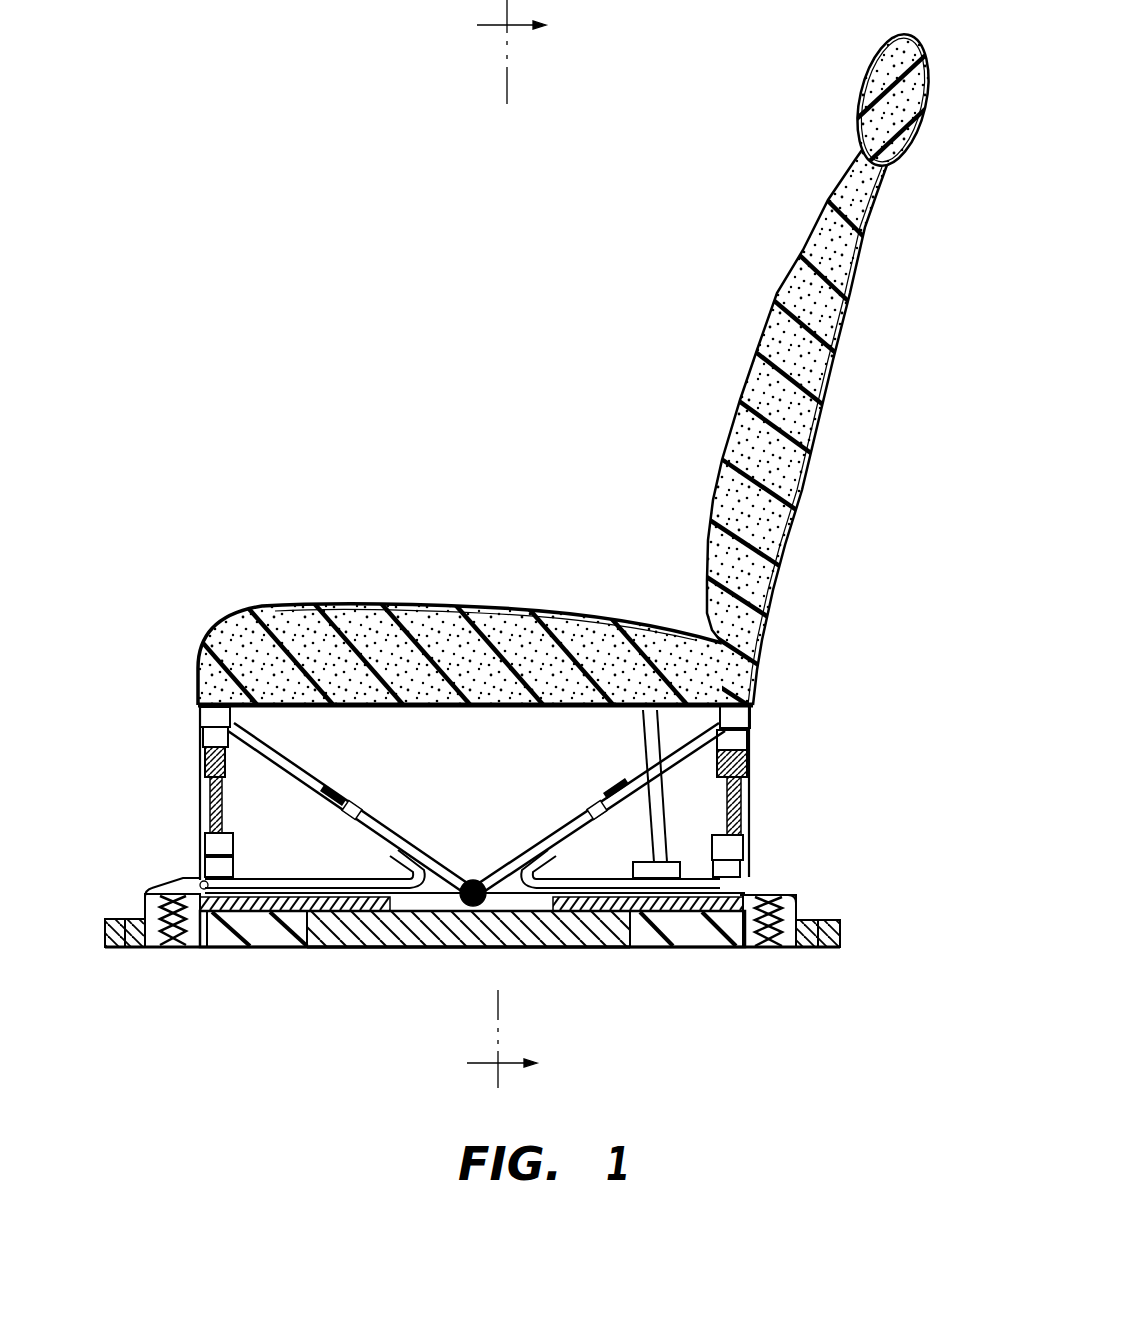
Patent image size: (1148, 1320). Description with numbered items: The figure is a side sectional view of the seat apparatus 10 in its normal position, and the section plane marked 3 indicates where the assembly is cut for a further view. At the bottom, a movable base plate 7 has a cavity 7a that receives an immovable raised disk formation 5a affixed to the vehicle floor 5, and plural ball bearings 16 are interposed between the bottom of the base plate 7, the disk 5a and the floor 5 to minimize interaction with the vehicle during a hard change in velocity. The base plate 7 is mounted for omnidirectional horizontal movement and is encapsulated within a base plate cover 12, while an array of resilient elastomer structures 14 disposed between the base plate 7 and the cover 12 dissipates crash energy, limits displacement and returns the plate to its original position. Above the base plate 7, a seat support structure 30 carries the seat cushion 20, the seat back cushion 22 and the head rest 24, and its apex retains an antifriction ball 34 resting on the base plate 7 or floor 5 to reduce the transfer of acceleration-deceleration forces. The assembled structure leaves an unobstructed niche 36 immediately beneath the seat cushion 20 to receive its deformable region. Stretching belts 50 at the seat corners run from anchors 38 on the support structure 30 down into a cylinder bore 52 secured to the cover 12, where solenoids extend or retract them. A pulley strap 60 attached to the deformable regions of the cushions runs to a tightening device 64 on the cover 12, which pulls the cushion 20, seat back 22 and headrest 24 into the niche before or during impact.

The section line 3- 3 is at (518, 545).
The seat apparatus 10 is at (495, 345).
The head rest 24 is at (910, 111).
The seat back cushion 22 is at (778, 461).
The seat cushion 20 is at (482, 659).
The niche 36 is at (464, 777).
The base plate 7 is at (200, 878).
The seat support structure 30 is at (281, 786).
The pulley strap 60 is at (667, 758).
The tightening device 64 is at (680, 862).
The anchor 38 is at (745, 713).
The stretching belt 50 is at (749, 789).
The cylinder bore 52 is at (714, 847).
The antifriction ball 34 is at (468, 904).
The base plate cover 12 is at (163, 891).
The resilient elastomer structures 14 is at (233, 948).
The vehicle floor 5 is at (805, 951).
The raised disk formation 5a is at (565, 949).
The cavity 7a is at (308, 949).
The ball bearings 16 is at (628, 949).